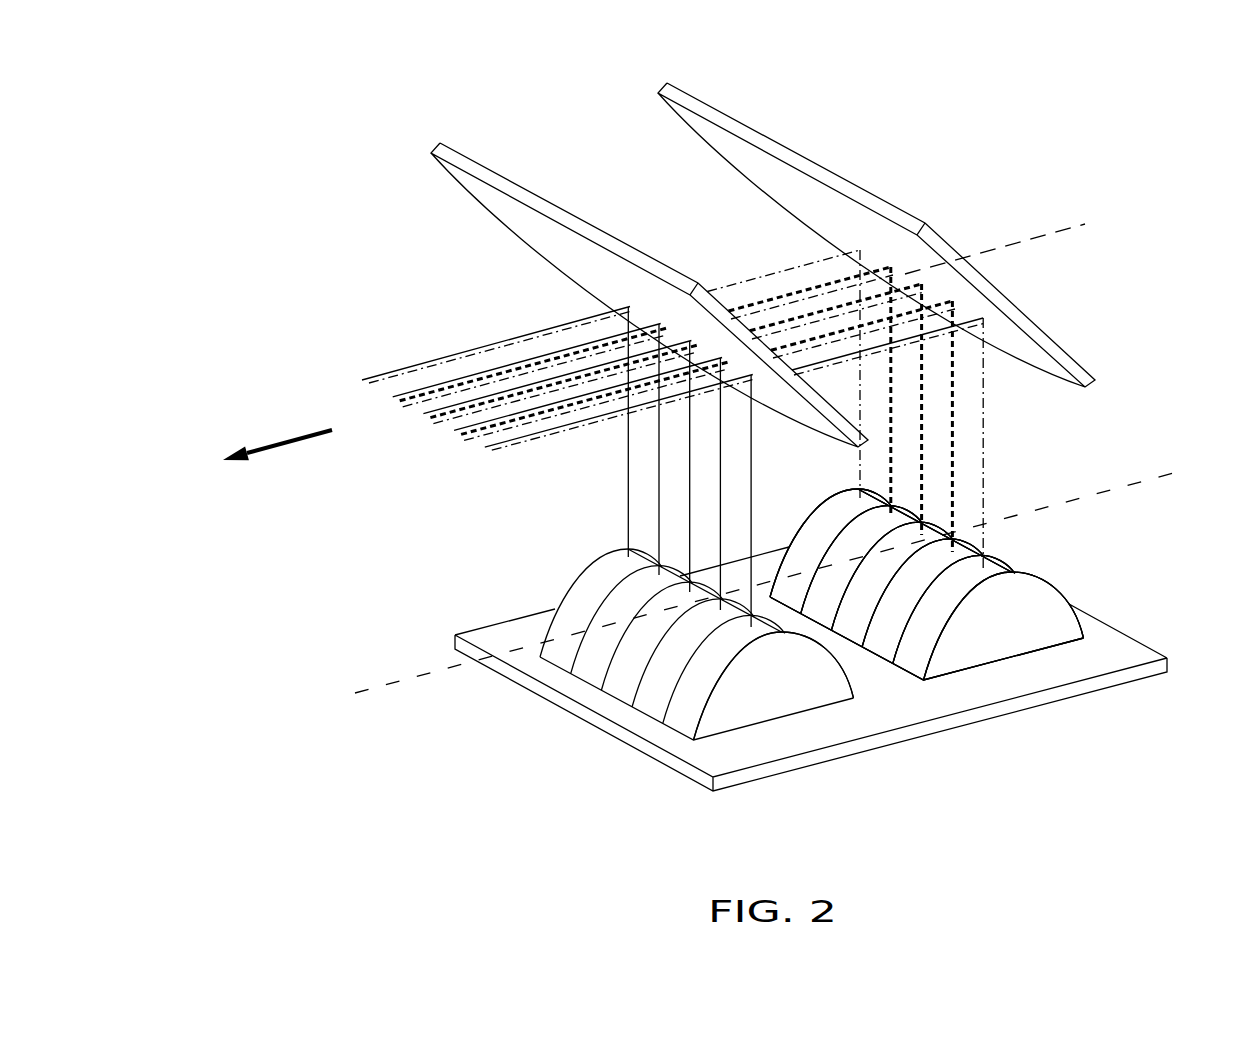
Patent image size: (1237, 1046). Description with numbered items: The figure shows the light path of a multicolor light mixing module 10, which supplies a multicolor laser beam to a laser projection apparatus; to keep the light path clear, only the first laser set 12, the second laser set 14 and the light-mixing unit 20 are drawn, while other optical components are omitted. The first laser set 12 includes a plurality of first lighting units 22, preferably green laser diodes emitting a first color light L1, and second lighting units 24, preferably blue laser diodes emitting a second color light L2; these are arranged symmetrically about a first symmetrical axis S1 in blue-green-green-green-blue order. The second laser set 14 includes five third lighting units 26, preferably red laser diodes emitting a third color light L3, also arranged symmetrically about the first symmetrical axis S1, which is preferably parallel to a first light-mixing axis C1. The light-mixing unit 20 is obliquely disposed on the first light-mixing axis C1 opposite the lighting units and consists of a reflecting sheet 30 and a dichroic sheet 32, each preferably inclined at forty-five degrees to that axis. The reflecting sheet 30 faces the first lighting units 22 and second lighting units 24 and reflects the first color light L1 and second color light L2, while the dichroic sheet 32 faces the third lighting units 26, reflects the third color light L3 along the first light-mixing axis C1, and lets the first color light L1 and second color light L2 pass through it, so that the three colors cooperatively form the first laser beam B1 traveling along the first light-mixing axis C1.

The multicolor light mixing module 10 is at (312, 167).
The first laser set 12 is at (1050, 660).
The second laser set 14 is at (768, 747).
The light-mixing unit 20 is at (775, 62).
The first lighting unit 22 is at (822, 610).
The second lighting unit 24 is at (790, 593).
The third lighting unit 26 is at (683, 718).
The reflecting sheet 30 is at (697, 99).
The dichroic sheet 32 is at (482, 163).
The first color light L1 is at (955, 406).
The second color light L2 is at (786, 268).
The third color light L3 is at (415, 366).
The first laser beam B1 is at (248, 450).
The first light-mixing axis C1 is at (1013, 241).
The first symmetrical axis S1 is at (793, 571).